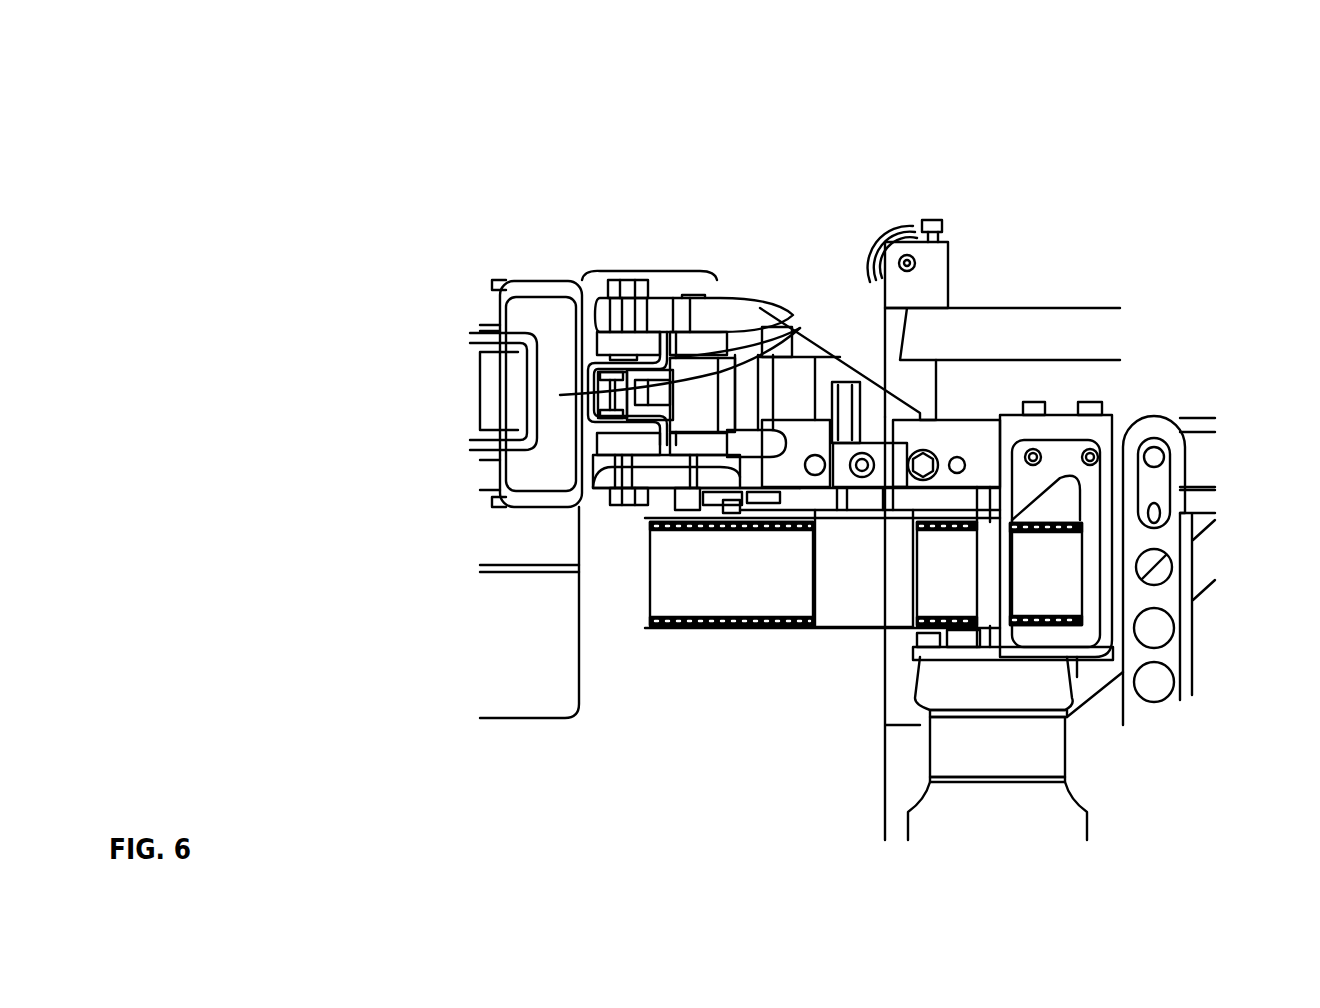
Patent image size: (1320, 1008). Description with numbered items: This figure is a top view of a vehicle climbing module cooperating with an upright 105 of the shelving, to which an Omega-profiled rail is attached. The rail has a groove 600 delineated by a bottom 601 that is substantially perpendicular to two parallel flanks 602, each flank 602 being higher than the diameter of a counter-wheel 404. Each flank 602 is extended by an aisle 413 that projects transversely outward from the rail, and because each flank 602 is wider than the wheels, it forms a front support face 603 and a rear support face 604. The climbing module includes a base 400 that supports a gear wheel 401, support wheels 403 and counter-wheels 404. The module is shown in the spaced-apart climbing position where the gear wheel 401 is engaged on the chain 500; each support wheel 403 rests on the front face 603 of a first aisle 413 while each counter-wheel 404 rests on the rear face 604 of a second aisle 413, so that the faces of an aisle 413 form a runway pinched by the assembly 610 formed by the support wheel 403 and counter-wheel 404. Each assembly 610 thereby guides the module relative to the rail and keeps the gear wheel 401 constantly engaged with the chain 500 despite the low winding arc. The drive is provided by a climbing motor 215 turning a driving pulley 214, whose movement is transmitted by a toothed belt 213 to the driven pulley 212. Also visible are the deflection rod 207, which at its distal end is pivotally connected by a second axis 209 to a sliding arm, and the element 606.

The upright 105 is at (540, 297).
The chain 500 is at (598, 392).
The bottom 601 is at (597, 410).
The flank 602 is at (608, 280).
The rear support face 604 is at (638, 280).
The assembly 610 is at (648, 280).
The aisle 413 is at (668, 280).
The front support face 603 is at (701, 280).
The counter-wheel 404 is at (606, 280).
The support wheel 403 is at (772, 340).
The groove 600 is at (804, 386).
The gear wheel 401 is at (803, 367).
The base 400 is at (835, 400).
The driven pulley 212 is at (802, 583).
The mounting block 606 is at (865, 627).
The toothed belt 213 is at (860, 640).
The deflection rod 207 is at (1168, 653).
The second axis 209 is at (1153, 450).
The driving pulley 214 is at (963, 640).
The climbing motor 215 is at (950, 802).